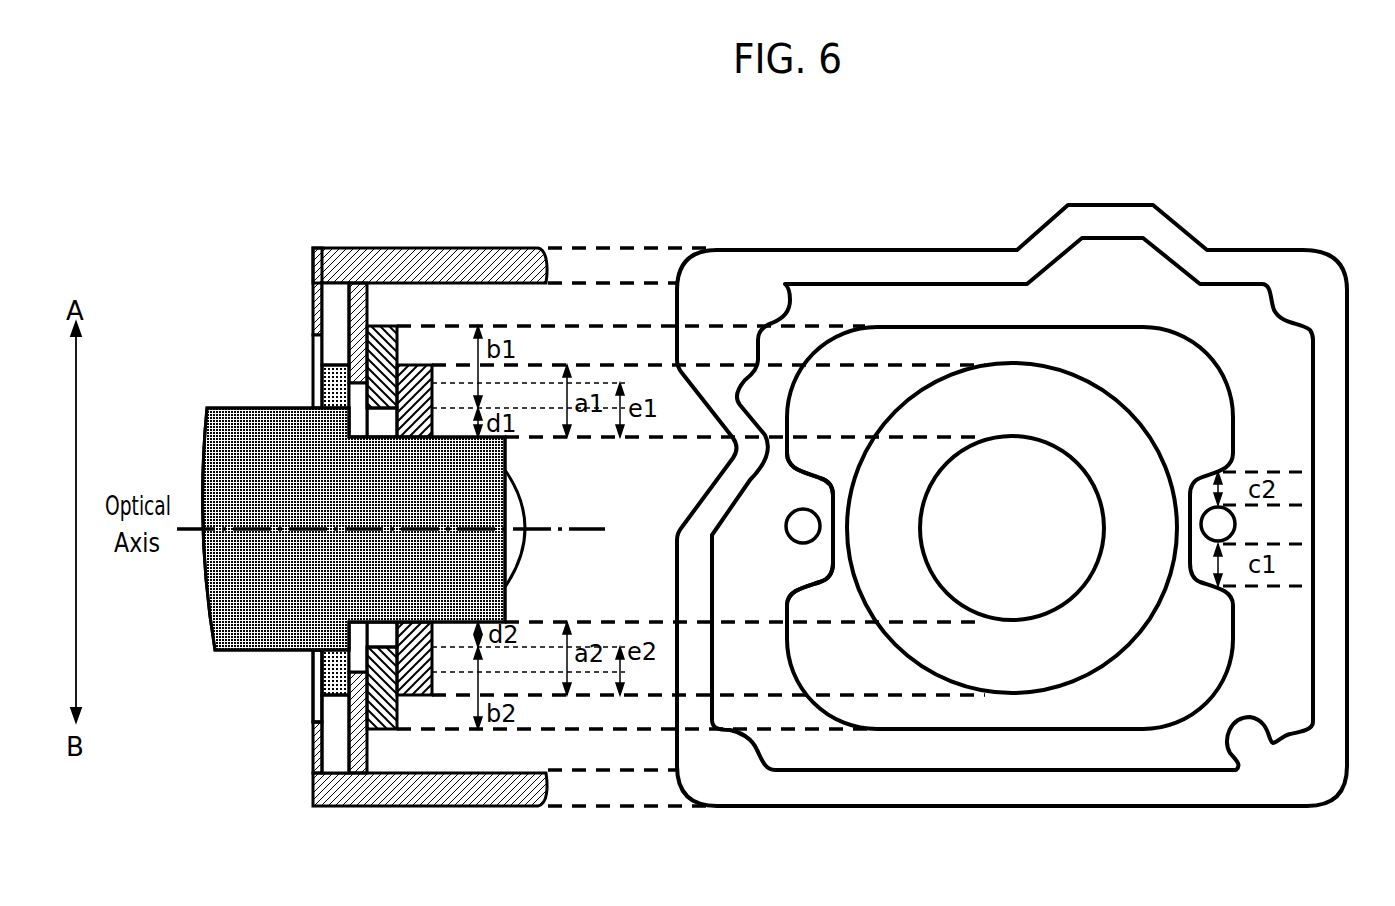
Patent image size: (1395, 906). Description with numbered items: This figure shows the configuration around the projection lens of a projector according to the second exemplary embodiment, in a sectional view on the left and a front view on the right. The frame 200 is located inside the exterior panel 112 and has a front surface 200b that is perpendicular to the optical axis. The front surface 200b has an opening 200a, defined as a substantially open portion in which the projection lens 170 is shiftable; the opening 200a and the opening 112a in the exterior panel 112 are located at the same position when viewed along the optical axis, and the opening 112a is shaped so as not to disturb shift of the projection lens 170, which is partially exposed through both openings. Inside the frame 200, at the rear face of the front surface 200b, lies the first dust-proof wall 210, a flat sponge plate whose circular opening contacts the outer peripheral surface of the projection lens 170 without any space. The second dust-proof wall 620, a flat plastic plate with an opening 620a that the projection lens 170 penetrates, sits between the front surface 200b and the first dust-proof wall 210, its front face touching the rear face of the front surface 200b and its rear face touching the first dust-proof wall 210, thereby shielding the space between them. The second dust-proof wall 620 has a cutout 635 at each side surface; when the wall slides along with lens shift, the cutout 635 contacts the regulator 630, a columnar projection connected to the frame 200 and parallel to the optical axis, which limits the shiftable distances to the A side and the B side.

The exterior panel 112 is at (312, 770).
The opening 112a is at (312, 687).
The projection lens 170 is at (253, 460).
The frame 200 is at (468, 268).
The opening 200a is at (355, 402).
The front surface 200b is at (355, 327).
The first dust-proof wall 210 is at (414, 672).
The second dust-proof wall 620 is at (377, 707).
The opening 620a is at (377, 634).
The regulator 630 is at (812, 527).
The cutout 635 is at (816, 586).